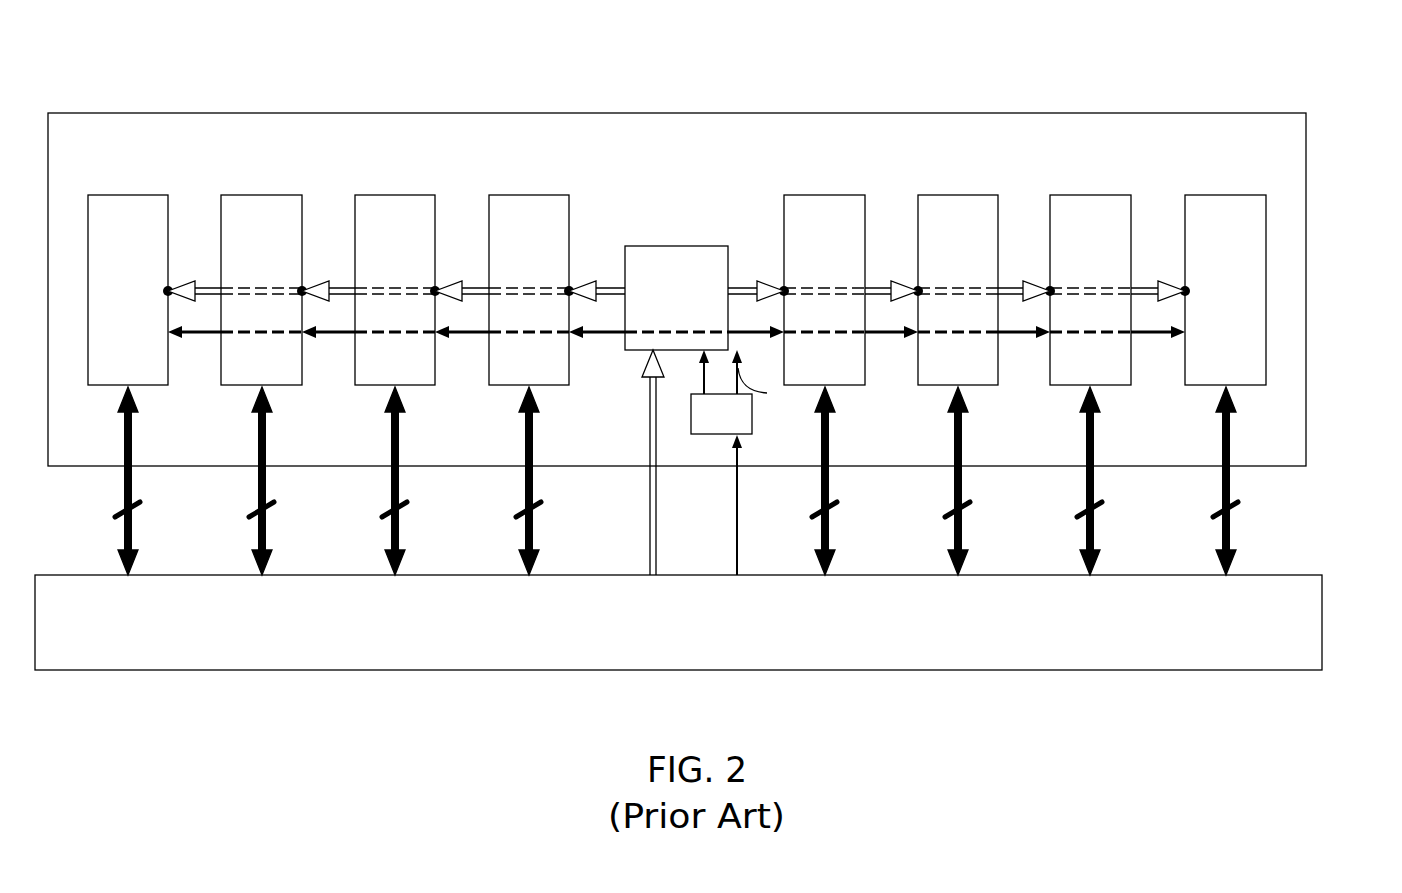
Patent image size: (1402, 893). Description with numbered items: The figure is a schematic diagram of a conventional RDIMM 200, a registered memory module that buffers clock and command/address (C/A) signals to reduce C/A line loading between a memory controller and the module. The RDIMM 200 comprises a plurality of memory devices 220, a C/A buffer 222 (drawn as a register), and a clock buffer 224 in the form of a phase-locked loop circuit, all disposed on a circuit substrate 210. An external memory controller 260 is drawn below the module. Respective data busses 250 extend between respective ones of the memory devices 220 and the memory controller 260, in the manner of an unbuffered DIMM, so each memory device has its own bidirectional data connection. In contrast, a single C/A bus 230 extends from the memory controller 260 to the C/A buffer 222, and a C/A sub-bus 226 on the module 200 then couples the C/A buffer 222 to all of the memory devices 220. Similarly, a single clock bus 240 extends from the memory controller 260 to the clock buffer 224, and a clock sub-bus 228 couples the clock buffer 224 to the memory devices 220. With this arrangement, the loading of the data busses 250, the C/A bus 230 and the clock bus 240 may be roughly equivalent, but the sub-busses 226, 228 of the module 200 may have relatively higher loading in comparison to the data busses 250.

The RDIMM 200 is at (1180, 48).
The circuit substrate 210 is at (1306, 162).
The memory devices 220 is at (127, 195).
The C/A buffer 222 is at (670, 246).
The clock buffer 224 is at (713, 434).
The C/A sub-bus 226 is at (330, 286).
The clock sub-bus 228 is at (327, 338).
The C/A bus 230 is at (650, 503).
The clock bus 240 is at (737, 529).
The data busses 250 is at (1238, 517).
The memory controller 260 is at (1322, 621).